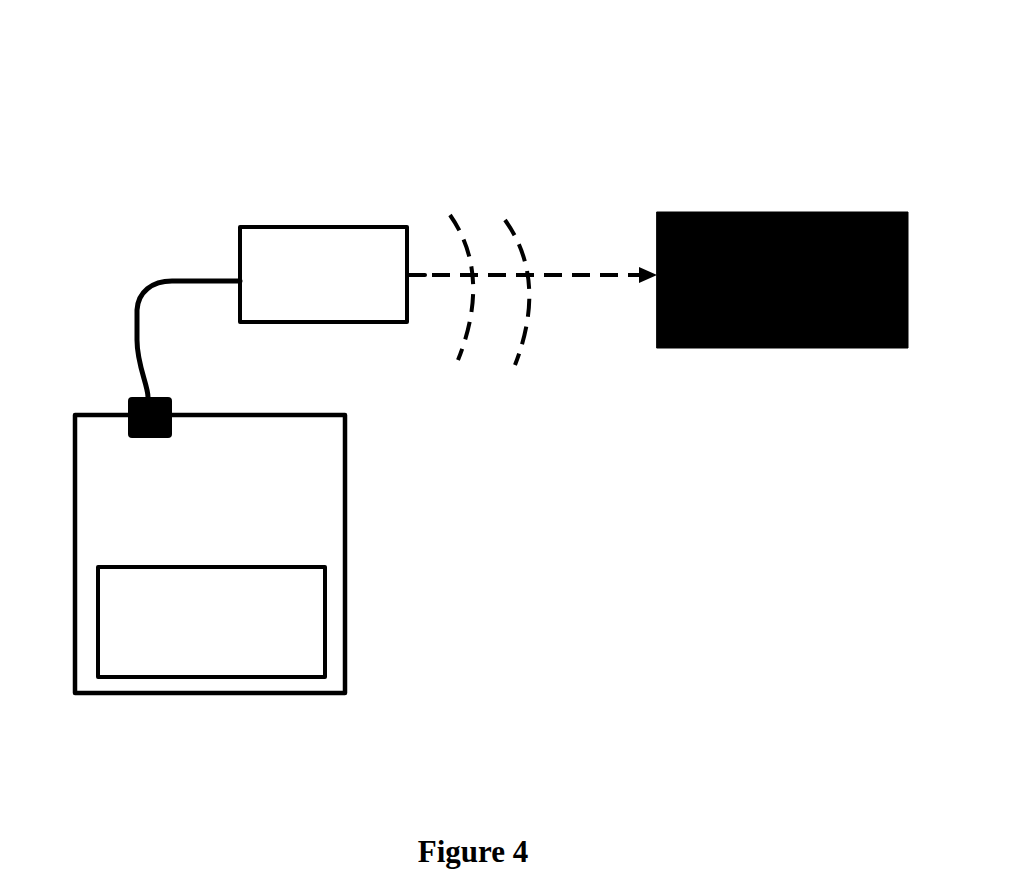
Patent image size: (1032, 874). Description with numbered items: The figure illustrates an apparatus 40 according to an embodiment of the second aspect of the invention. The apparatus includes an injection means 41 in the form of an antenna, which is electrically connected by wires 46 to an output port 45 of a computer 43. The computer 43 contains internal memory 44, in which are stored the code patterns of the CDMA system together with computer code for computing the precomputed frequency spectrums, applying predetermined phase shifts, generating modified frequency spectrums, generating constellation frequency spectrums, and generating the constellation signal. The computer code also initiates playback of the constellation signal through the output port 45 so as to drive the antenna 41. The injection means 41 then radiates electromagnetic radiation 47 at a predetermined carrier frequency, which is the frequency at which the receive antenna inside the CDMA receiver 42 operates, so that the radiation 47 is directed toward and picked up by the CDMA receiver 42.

The apparatus 40 is at (230, 140).
The injection means 41 is at (392, 227).
The CDMA receiver 42 is at (703, 212).
The computer 43 is at (345, 482).
The internal memory 44 is at (325, 617).
The output port 45 is at (127, 403).
The wires 46 is at (157, 287).
The electromagnetic radiation 47 is at (522, 340).